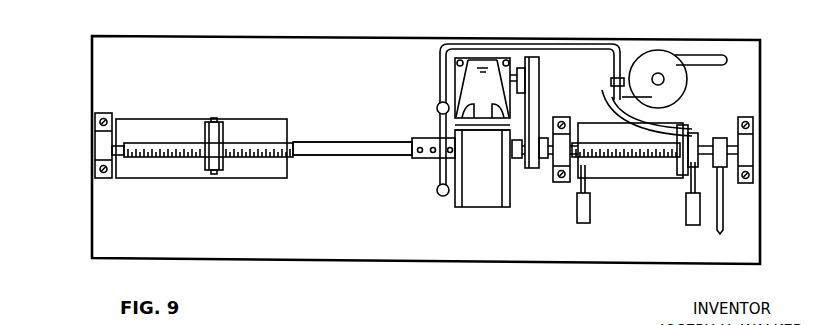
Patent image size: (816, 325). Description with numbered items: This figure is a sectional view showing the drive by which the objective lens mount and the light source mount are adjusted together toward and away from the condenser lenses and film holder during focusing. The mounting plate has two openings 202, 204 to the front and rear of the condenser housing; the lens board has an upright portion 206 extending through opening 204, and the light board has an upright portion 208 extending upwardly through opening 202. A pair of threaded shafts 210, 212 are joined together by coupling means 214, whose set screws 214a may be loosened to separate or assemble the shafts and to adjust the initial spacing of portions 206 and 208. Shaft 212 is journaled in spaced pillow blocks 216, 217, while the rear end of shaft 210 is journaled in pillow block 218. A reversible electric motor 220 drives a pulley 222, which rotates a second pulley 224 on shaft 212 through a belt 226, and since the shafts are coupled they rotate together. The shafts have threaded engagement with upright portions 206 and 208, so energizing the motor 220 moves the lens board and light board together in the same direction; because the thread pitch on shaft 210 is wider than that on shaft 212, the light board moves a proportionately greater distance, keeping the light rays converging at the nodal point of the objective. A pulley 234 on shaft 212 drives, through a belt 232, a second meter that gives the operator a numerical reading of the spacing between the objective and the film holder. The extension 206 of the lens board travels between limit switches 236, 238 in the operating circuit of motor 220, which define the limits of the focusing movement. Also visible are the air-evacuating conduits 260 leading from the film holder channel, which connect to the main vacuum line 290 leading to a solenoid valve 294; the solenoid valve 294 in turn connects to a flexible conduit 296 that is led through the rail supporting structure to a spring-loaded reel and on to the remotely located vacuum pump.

The opening 202 is at (167, 119).
The opening 204 is at (615, 178).
The upright portion 206 is at (692, 133).
The upright portion 208 is at (215, 120).
The threaded shaft 210 is at (311, 140).
The threaded shaft 212 is at (597, 133).
The coupling means 214 is at (413, 141).
The set screws 214a is at (420, 156).
The pillow block 216 is at (750, 150).
The pillow block 217 is at (550, 170).
The pillow block 218 is at (100, 138).
The reversible electric motor 220 is at (470, 58).
The pulley 222 is at (531, 57).
The second pulley 224 is at (518, 199).
The belt 226 is at (535, 112).
The belt 232 is at (722, 204).
The pulley 234 is at (742, 117).
The limit switch 236 is at (586, 218).
The limit switch 238 is at (694, 218).
The conduits 260 is at (436, 107).
The main vacuum line 290 is at (440, 60).
The solenoid valve 294 is at (647, 55).
The flexible conduit 296 is at (710, 55).